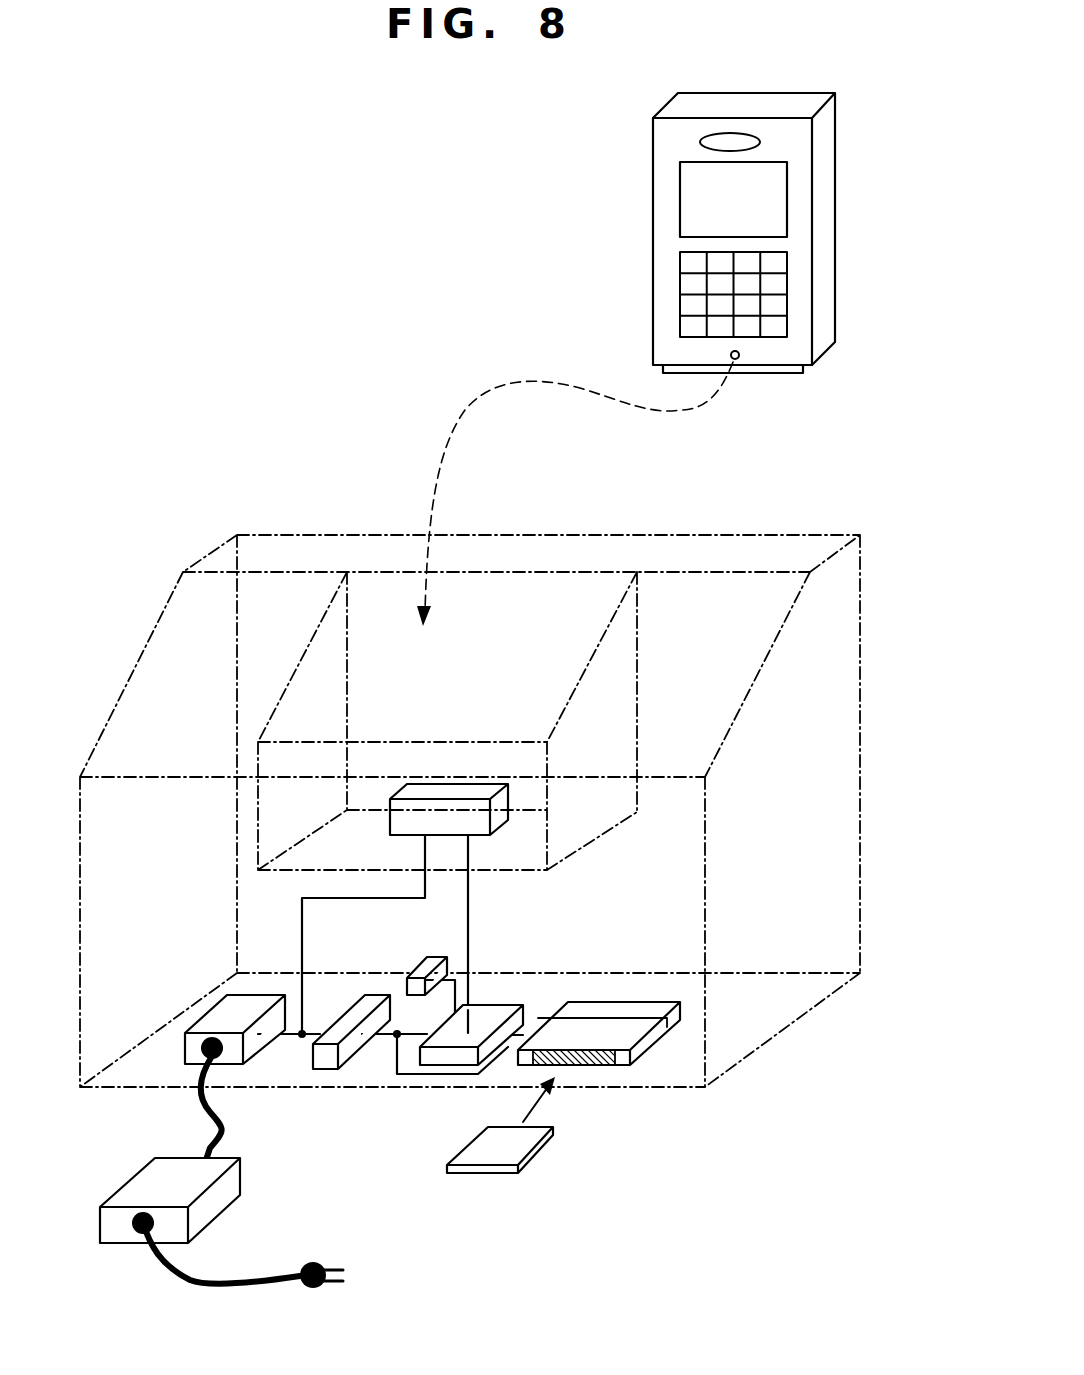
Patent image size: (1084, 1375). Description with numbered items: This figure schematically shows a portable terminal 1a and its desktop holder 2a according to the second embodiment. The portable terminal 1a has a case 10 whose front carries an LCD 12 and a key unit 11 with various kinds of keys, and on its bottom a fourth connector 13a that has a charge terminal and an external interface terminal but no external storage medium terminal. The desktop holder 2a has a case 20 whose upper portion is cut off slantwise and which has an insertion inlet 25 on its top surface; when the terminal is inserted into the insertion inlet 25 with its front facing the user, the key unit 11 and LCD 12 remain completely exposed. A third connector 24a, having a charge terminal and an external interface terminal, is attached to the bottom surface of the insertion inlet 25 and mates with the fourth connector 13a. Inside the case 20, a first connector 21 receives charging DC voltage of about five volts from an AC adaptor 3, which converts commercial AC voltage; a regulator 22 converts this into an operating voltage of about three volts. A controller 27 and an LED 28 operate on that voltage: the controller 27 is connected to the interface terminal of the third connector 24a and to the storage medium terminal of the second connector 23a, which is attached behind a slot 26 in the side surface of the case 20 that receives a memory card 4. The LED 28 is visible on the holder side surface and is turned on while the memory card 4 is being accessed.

The portable terminal 1a is at (746, 76).
The case 10 is at (835, 123).
The LCD 12 is at (768, 213).
The key unit 11 is at (773, 283).
The fourth connector 13a is at (763, 374).
The desktop holder 2a is at (290, 516).
The case 20 is at (860, 692).
The insertion inlet 25 is at (502, 597).
The third connector 24a is at (437, 787).
The first connector 21 is at (223, 1015).
The regulator 22 is at (326, 1069).
The controller 27 is at (487, 1010).
The LED 28 is at (415, 975).
The card reader 23a is at (675, 1021).
The slot 26 is at (622, 1065).
The memory card 4 is at (523, 1147).
The AC adaptor 3 is at (117, 1228).